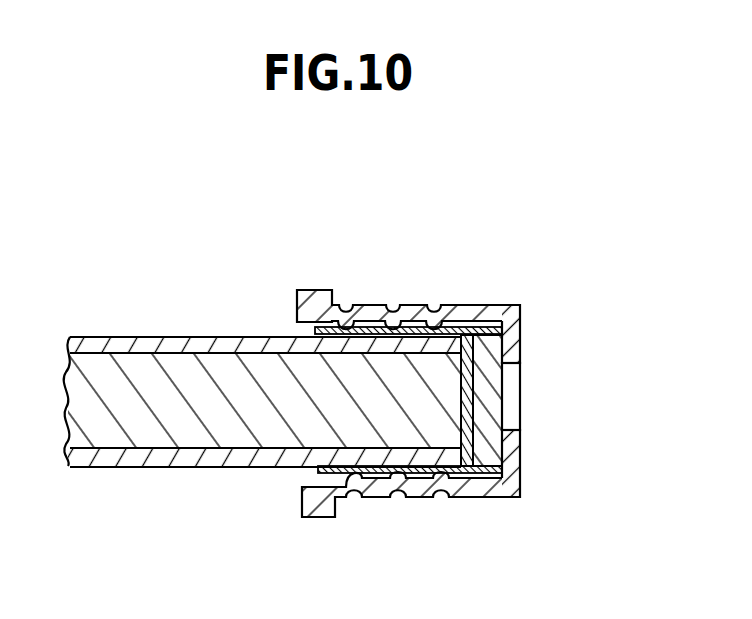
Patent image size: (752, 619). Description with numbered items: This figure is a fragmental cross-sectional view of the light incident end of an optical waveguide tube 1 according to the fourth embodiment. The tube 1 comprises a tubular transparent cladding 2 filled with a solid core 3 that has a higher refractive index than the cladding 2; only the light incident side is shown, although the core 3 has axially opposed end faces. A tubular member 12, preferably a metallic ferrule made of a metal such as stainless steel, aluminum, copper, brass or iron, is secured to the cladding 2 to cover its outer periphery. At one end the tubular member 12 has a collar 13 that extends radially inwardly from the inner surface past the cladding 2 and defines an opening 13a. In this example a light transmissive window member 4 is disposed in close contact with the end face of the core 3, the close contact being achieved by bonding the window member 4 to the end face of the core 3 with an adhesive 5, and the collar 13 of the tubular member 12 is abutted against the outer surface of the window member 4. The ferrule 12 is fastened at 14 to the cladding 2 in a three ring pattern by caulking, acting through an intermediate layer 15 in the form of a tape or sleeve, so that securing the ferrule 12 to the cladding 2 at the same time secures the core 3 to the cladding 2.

The optical waveguide tube 1 is at (136, 280).
The tubular transparent cladding 2 is at (204, 343).
The solid core 3 is at (212, 427).
The light transmissive window member 4 is at (487, 381).
The adhesive 5 is at (468, 432).
The tubular member 12 is at (418, 304).
The collar 13 is at (510, 330).
The opening 13a is at (512, 405).
The fastening location 14 is at (381, 455).
The intermediate layer 15 is at (372, 333).